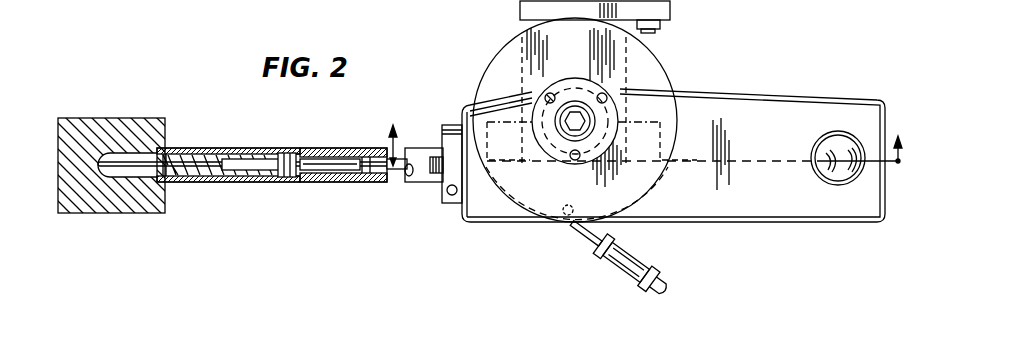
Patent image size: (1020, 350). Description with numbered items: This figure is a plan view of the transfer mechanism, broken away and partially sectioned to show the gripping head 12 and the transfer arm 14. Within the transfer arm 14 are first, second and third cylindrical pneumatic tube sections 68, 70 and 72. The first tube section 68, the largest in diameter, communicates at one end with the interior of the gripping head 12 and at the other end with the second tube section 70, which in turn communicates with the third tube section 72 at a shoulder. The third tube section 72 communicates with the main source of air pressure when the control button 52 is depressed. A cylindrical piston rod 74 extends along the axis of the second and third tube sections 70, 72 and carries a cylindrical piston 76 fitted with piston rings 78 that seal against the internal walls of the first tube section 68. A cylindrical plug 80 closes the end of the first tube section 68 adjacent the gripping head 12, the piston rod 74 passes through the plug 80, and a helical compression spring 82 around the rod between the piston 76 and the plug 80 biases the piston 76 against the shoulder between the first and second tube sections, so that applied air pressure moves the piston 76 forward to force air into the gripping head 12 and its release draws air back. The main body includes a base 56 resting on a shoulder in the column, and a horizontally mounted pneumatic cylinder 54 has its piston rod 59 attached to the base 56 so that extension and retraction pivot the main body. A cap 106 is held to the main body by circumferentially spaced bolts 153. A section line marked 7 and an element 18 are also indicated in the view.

The gripping head 12 is at (122, 100).
The transfer arm 14 is at (256, 133).
The piston rod 74 is at (363, 147).
The section line 7- 7 is at (645, 135).
The second tube section 70 is at (337, 182).
The third tube section 72 is at (388, 176).
The cylindrical plug 80 is at (168, 181).
The helical compression spring 82 is at (192, 173).
The first tube section 68 is at (213, 180).
The piston 76 is at (293, 181).
The piston rings 78 is at (297, 183).
The cap 106 is at (588, 52).
The bolts 153 is at (545, 96).
The opening 18 is at (817, 131).
The control button 52 is at (836, 168).
The base 56 is at (530, 198).
The piston rod 59 is at (591, 243).
The pneumatic cylinder 54 is at (626, 268).